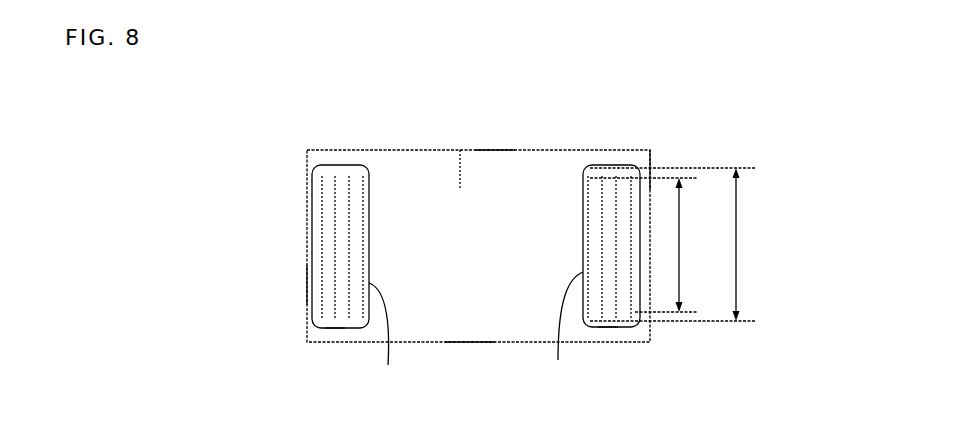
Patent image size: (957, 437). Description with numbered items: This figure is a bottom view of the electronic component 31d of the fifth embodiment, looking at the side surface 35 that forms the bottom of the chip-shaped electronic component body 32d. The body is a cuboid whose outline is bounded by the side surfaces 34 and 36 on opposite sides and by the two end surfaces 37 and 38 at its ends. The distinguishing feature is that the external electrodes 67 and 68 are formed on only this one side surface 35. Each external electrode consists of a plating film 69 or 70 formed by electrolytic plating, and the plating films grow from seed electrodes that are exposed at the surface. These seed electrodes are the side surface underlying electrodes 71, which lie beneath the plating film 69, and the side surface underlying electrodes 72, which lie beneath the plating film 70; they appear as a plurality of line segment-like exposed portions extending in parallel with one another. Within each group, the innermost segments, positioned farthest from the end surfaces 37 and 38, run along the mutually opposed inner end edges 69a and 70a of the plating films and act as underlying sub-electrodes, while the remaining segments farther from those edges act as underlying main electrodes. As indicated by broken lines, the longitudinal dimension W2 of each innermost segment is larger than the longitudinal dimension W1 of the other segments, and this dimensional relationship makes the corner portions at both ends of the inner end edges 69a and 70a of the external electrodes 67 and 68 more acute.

The electronic component 31d is at (410, 84).
The electronic component body 32d is at (545, 146).
The side surface 34 is at (493, 150).
The side surface 35 is at (460, 150).
The side surface 36 is at (468, 342).
The end surface 37 is at (307, 285).
The end surface 38 is at (652, 158).
The external electrode 67 is at (338, 160).
The external electrode 68 is at (610, 160).
The plating film 69 is at (335, 328).
The end edge 69a is at (387, 339).
The plating film 70 is at (608, 328).
The end edge 70a is at (563, 331).
The side surface underlying electrodes 71 is at (165, 187).
The side surface underlying electrodes 72 is at (795, 332).
The longitudinal dimension W1 is at (649, 245).
The longitudinal dimension W2 is at (680, 244).